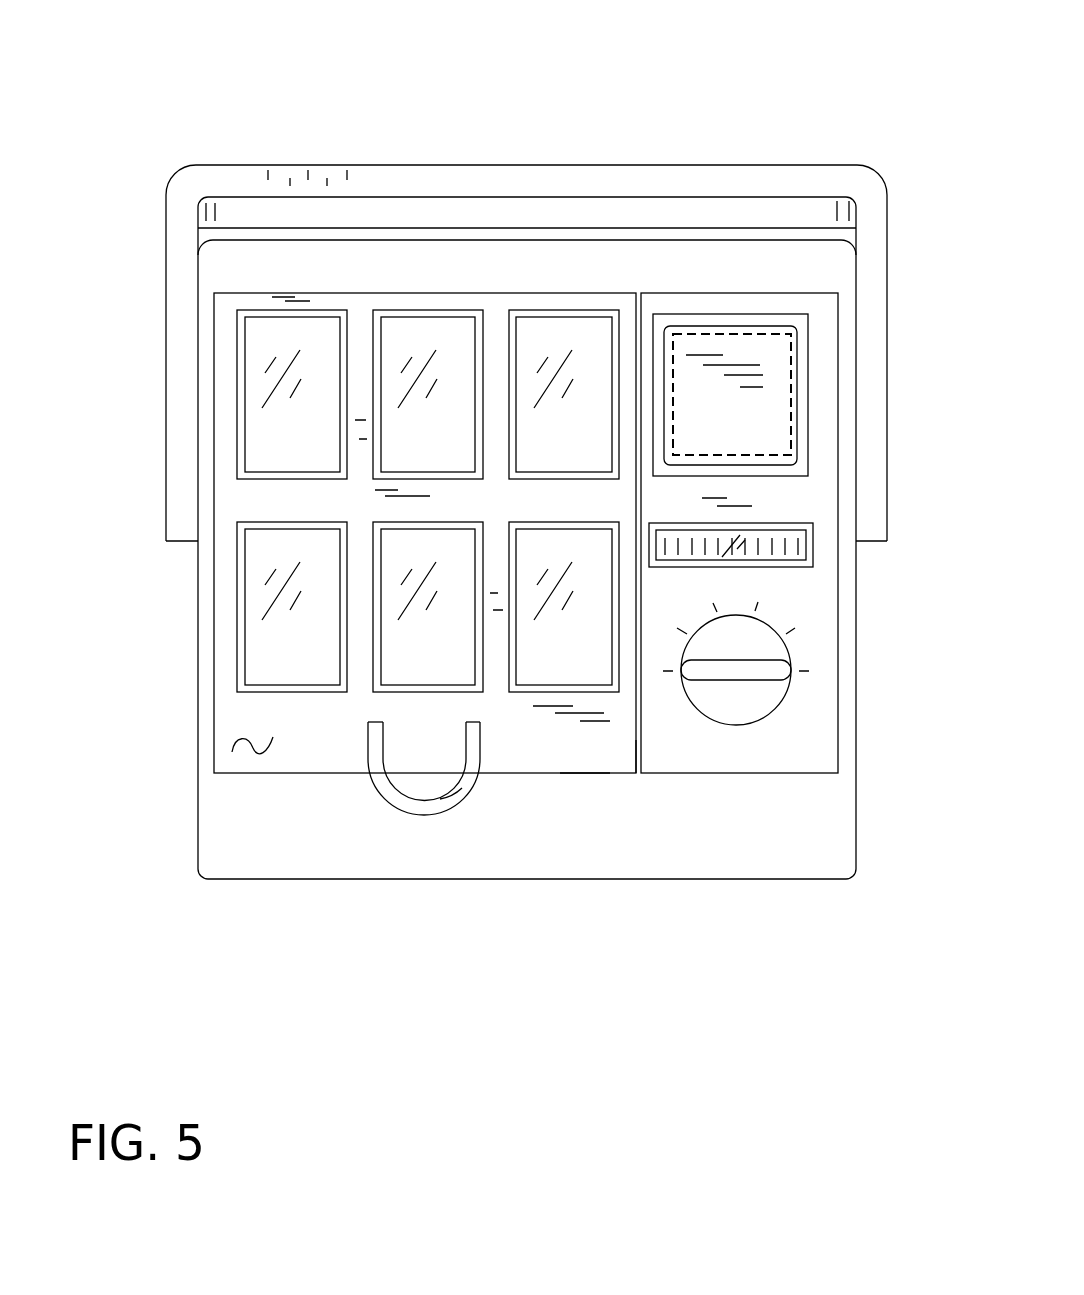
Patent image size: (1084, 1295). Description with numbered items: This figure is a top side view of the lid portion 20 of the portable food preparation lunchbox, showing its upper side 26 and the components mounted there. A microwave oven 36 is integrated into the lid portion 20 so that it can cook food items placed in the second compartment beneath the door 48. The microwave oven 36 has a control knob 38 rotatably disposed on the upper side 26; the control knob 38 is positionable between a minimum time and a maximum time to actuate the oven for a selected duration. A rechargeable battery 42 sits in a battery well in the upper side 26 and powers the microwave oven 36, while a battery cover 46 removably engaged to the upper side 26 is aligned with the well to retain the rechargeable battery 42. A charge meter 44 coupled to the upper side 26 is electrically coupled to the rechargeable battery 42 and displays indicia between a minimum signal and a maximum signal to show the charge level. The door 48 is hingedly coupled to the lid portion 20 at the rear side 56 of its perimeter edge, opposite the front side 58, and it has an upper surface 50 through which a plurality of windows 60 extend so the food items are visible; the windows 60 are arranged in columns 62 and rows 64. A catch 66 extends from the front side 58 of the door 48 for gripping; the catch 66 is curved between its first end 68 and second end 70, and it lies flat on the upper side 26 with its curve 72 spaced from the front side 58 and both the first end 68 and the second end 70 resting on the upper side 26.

The lid portion 20 is at (722, 228).
The upper side 26 is at (802, 602).
The microwave oven 36 is at (816, 505).
The control knob 38 is at (788, 690).
The rechargeable battery 42 is at (788, 345).
The charge meter 44 is at (808, 543).
The battery cover 46 is at (653, 343).
The door 48 is at (627, 775).
The upper surface 50 is at (252, 740).
The rear side 56 is at (490, 293).
The front side 58 is at (583, 775).
The windows 60 is at (297, 392).
The columns 62 is at (256, 296).
The rows 64 is at (224, 380).
The catch 66 is at (463, 790).
The first end 68 is at (382, 722).
The second end 70 is at (478, 722).
The curve 72 is at (430, 834).